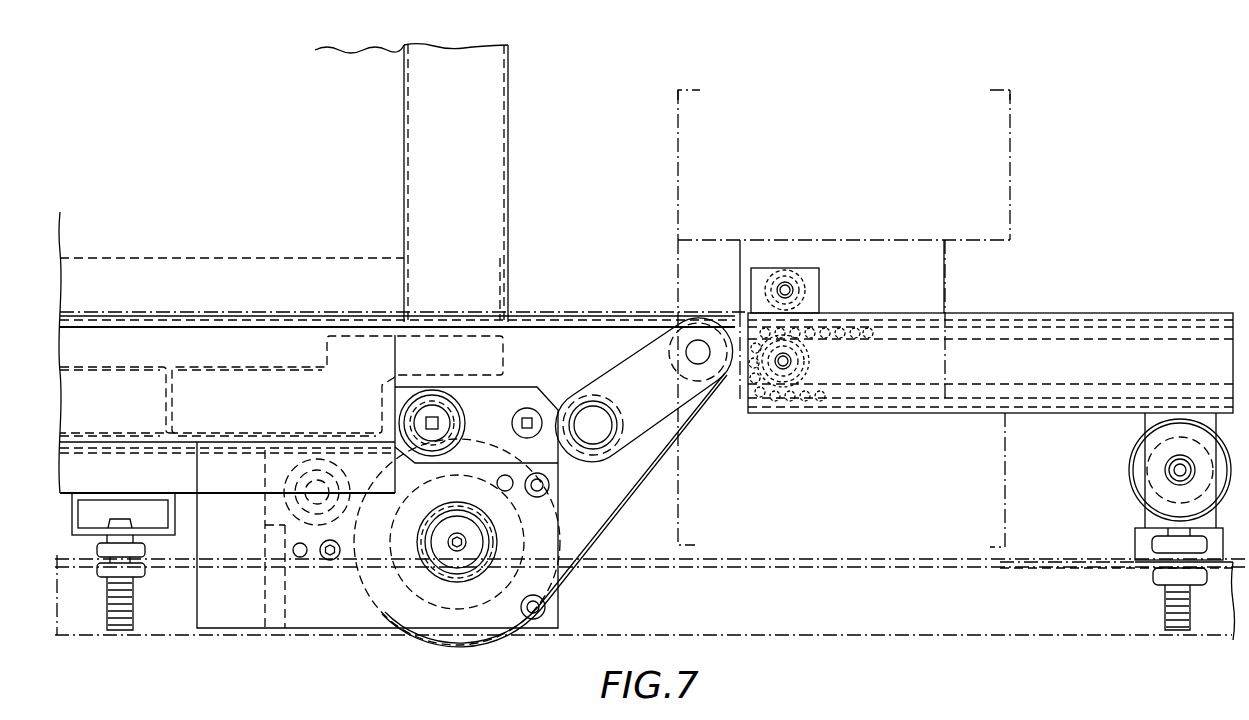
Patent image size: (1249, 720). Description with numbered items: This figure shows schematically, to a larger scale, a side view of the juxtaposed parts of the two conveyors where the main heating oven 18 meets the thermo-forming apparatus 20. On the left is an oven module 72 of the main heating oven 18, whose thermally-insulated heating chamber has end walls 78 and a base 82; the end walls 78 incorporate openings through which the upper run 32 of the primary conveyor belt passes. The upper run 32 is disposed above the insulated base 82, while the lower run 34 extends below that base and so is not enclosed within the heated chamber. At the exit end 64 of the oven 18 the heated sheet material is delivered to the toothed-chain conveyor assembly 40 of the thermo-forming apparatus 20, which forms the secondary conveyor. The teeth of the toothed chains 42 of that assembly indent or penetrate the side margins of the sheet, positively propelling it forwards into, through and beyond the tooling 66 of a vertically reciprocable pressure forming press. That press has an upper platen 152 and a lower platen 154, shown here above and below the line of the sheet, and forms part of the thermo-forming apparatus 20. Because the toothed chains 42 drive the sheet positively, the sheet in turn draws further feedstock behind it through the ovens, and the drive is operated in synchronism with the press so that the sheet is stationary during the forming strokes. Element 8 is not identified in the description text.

The link arm 8 is at (668, 362).
The main heating oven 18 is at (512, 148).
The thermo-forming apparatus 20 is at (1026, 257).
The upper run 32 is at (598, 320).
The lower run 34 is at (123, 455).
The toothed-chain conveyor assembly 40 is at (1060, 312).
The toothed chains 42 is at (862, 320).
The exit end 64 is at (519, 296).
The tooling 66 is at (948, 298).
The oven module 72 is at (358, 230).
The end walls 78 is at (403, 124).
The base 82 is at (108, 368).
The upper platen 152 is at (1012, 122).
The lower platen 154 is at (1008, 464).